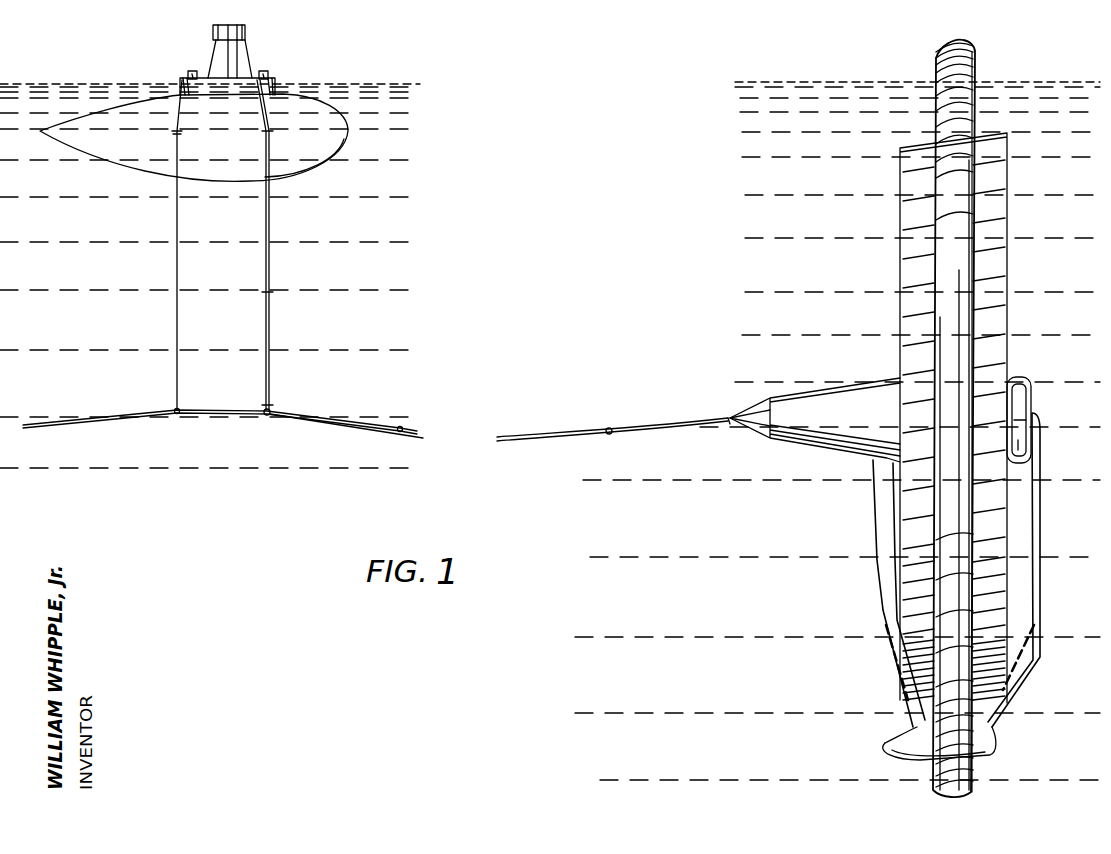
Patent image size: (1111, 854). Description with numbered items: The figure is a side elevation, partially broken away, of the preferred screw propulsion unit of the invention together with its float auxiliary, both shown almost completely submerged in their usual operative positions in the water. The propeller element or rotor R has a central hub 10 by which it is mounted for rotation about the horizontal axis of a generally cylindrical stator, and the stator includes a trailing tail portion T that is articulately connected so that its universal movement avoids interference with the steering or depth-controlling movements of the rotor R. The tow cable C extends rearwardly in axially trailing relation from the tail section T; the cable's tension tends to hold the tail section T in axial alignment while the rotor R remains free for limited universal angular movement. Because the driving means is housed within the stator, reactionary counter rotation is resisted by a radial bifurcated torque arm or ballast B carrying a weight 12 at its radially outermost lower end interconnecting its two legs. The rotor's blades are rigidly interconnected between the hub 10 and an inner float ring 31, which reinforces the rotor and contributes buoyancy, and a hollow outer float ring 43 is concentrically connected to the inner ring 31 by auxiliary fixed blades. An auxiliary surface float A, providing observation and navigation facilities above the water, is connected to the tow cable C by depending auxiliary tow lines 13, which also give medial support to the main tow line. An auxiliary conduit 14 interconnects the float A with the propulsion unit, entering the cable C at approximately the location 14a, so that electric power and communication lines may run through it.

The auxiliary surface float A is at (330, 165).
The auxiliary tow lines 13 is at (175, 270).
The auxiliary conduit 14 is at (265, 220).
The conduit entry location 14a is at (685, 432).
The tow cable C is at (550, 432).
The trailing tail portion T is at (826, 396).
The inner float ring 31 is at (1000, 274).
The outer float ring 43 is at (935, 50).
The rotor R is at (1030, 224).
The central hub 10 is at (1012, 392).
The ballast B is at (1036, 614).
The weight 12 is at (992, 748).